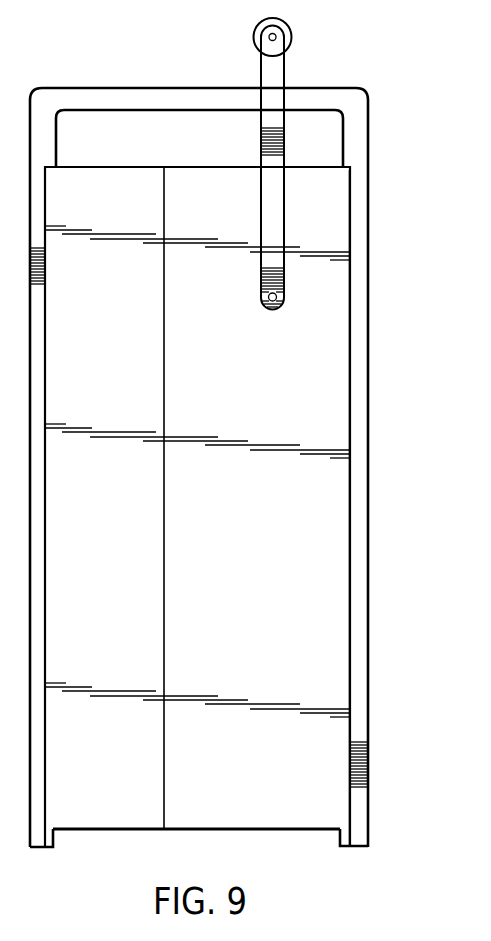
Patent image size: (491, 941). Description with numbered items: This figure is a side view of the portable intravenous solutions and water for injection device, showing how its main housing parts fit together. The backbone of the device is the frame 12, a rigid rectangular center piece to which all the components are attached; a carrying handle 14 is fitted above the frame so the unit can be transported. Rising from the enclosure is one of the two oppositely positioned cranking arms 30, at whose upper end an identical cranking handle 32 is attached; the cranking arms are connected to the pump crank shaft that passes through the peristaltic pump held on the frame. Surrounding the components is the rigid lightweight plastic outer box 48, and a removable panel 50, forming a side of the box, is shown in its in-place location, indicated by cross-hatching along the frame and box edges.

The frame 12 is at (366, 290).
The carrying handle 14 is at (104, 96).
The cranking arm 30 is at (270, 81).
The cranking handle 32 is at (292, 38).
The outer box 48 is at (121, 355).
The removable panel 50 is at (324, 423).